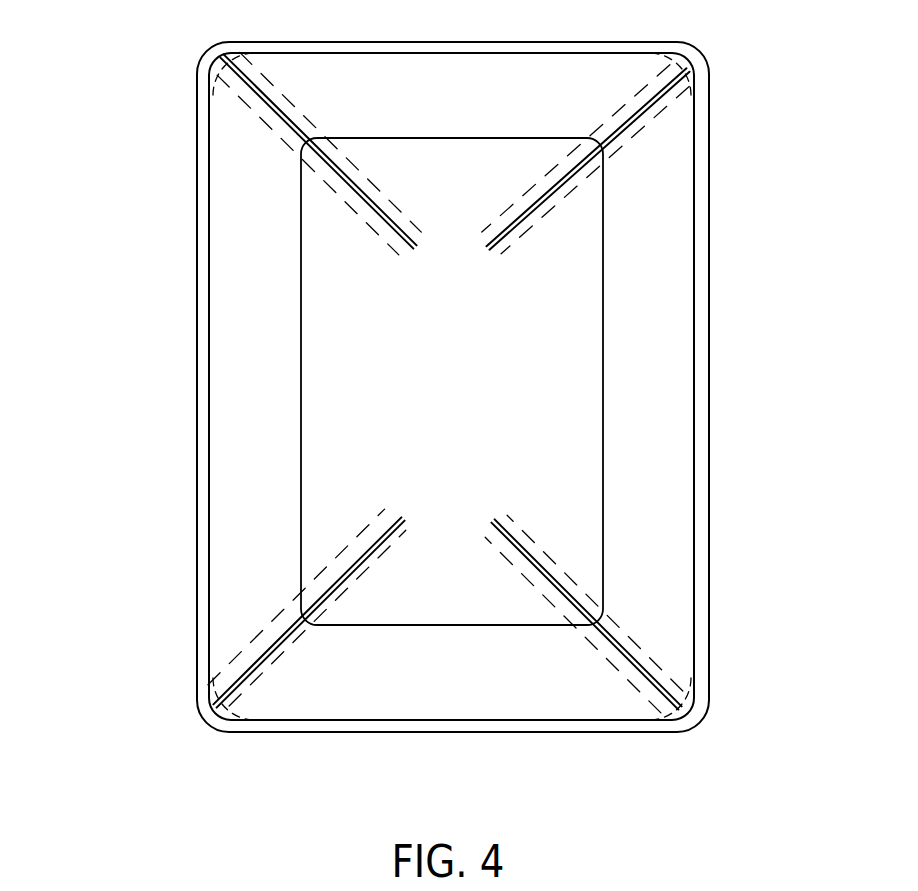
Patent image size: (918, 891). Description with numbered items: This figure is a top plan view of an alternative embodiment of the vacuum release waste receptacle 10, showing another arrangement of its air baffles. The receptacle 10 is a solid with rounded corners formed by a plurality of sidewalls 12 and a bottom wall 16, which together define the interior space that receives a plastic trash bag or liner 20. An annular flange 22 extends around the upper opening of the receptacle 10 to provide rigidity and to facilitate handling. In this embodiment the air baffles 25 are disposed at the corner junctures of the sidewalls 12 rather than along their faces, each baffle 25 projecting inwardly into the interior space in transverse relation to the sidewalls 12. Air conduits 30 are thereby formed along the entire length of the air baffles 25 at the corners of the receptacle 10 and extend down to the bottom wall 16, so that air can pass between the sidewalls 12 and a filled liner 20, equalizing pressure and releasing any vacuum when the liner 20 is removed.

The waste receptacle 10 is at (158, 295).
The sidewalls 12 is at (482, 110).
The bottom wall 16 is at (480, 374).
The trash bag or liner 20 is at (262, 58).
The annular flange 22 is at (708, 278).
The air baffle 25 is at (290, 128).
The air conduits 30 is at (222, 62).